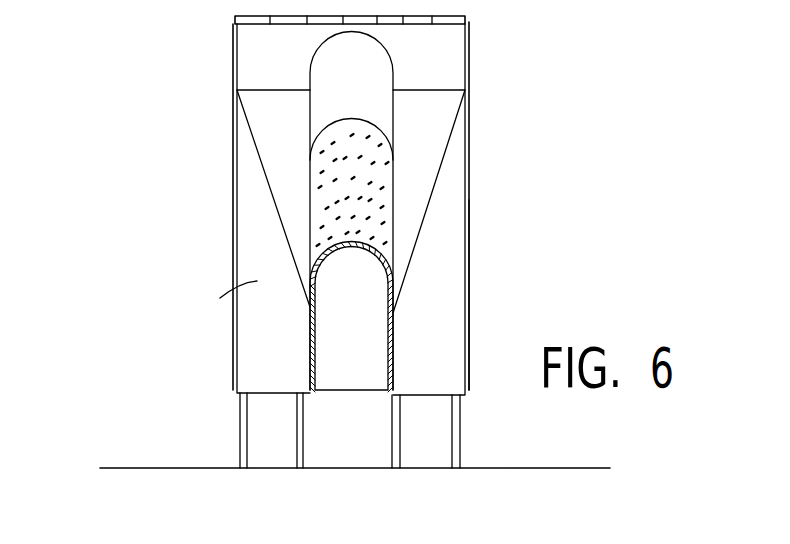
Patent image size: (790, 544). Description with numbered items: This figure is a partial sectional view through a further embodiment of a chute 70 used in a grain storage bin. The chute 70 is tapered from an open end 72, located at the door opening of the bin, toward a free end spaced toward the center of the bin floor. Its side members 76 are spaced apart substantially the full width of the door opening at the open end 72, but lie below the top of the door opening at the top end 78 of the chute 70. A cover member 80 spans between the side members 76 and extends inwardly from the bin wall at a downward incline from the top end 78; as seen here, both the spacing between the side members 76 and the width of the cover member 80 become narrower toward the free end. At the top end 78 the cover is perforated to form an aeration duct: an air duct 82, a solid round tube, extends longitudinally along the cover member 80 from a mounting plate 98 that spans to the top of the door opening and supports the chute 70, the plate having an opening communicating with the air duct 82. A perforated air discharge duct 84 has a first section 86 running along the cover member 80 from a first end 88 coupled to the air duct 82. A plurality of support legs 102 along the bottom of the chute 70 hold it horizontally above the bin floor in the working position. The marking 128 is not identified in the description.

The chute 70 is at (152, 245).
The open end 72 is at (458, 165).
The side members 76 is at (445, 263).
The top end 78 is at (450, 90).
The cover member 80 is at (272, 118).
The air duct 82 is at (380, 75).
The perforated air discharge duct 84 is at (317, 177).
The first section 86 is at (392, 202).
The first end 88 is at (383, 127).
The mounting plate 98 is at (258, 53).
The support legs 102 is at (297, 468).
The sheet label 128 is at (746, 532).